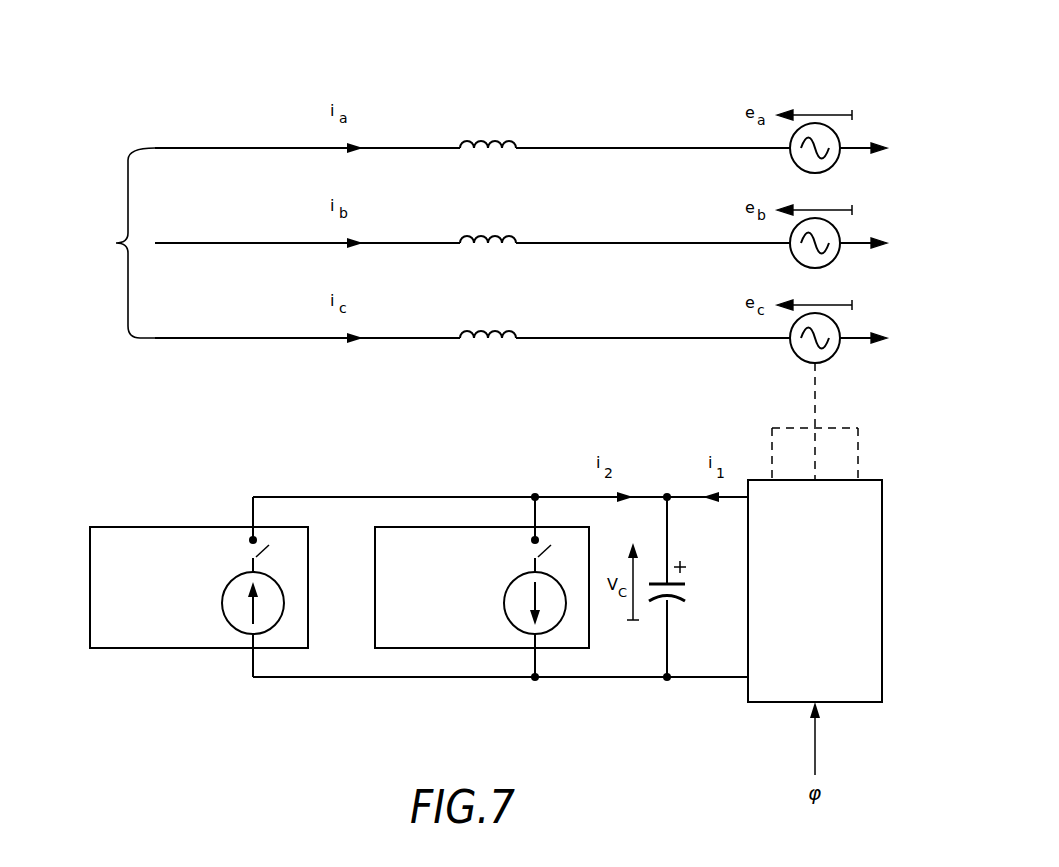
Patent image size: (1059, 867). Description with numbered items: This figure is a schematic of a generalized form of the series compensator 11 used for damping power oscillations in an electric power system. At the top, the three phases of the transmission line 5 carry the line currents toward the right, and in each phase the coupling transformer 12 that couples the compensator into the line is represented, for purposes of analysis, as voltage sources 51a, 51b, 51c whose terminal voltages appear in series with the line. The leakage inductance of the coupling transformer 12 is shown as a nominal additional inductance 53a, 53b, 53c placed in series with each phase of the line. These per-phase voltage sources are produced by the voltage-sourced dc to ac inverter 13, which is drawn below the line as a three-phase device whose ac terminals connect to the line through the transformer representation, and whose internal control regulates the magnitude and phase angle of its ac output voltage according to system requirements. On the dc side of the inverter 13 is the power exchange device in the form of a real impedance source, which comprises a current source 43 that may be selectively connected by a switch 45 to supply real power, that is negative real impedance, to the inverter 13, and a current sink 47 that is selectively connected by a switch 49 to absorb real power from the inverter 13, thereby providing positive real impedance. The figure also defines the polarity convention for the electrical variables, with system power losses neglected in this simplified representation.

The transmission line 5 is at (116, 243).
The nominal additional inductance 53a is at (491, 134).
The nominal additional inductance 53b is at (481, 228).
The nominal additional inductance 53c is at (474, 324).
The voltage source 51a is at (839, 330).
The voltage source 51b is at (839, 235).
The voltage source 51c is at (839, 140).
The coupling transformer 12 is at (833, 69).
The series compensator 11 is at (886, 434).
The voltage-sourced dc to ac inverter 13 is at (882, 620).
The current source 43 is at (150, 527).
The switch 45 is at (250, 552).
The current sink 47 is at (405, 527).
The switch 49 is at (531, 552).